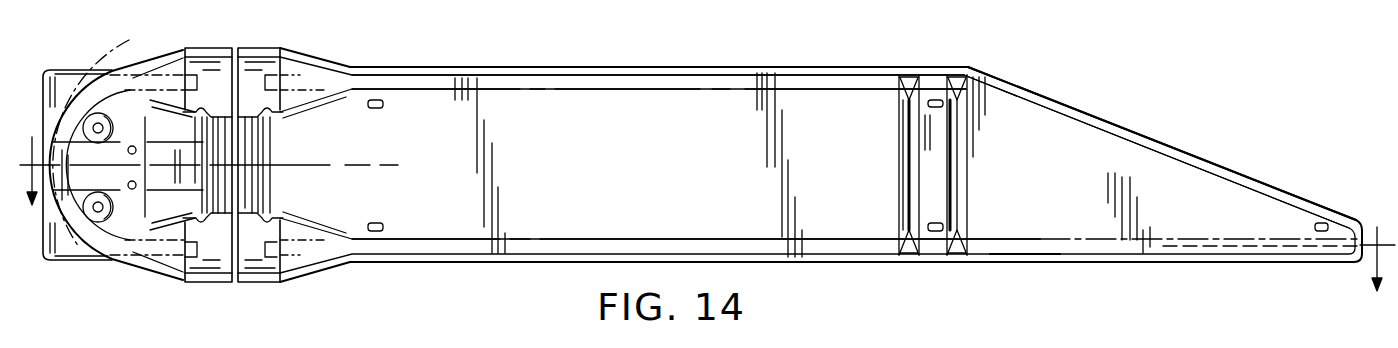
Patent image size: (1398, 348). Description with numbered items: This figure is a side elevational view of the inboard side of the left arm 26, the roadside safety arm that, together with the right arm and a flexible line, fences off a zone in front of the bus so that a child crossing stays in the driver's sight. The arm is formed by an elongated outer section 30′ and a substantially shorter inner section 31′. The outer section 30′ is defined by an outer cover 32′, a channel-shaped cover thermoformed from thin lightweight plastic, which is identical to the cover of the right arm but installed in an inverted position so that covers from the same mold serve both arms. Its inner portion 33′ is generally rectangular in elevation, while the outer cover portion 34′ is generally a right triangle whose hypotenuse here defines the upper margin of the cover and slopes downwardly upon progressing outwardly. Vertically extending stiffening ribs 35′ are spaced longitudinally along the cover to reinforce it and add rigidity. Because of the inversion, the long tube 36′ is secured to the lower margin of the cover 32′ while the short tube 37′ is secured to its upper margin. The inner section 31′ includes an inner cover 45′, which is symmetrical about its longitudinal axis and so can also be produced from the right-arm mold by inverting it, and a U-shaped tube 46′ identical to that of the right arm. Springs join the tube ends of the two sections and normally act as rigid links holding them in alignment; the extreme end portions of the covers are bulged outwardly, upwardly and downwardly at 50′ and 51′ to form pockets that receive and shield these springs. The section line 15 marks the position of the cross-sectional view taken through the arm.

The left arm 26 is at (740, 58).
The outer section 30′ is at (594, 62).
The outer cover 32′ is at (680, 128).
The inner portion 33′ is at (608, 197).
The outer cover portion 34′ is at (1080, 147).
The stiffening ribs 35′ is at (913, 73).
The long tube 36′ is at (1020, 238).
The short tube 37′ is at (802, 88).
The inner cover 45′ is at (82, 84).
The U-shaped tube 46′ is at (99, 131).
The bulged end portion of outer cover 50′ is at (262, 46).
The bulged end portion of inner cover 51′ is at (213, 46).
The inner section 31′ is at (157, 284).
The section line 15 is at (708, 202).